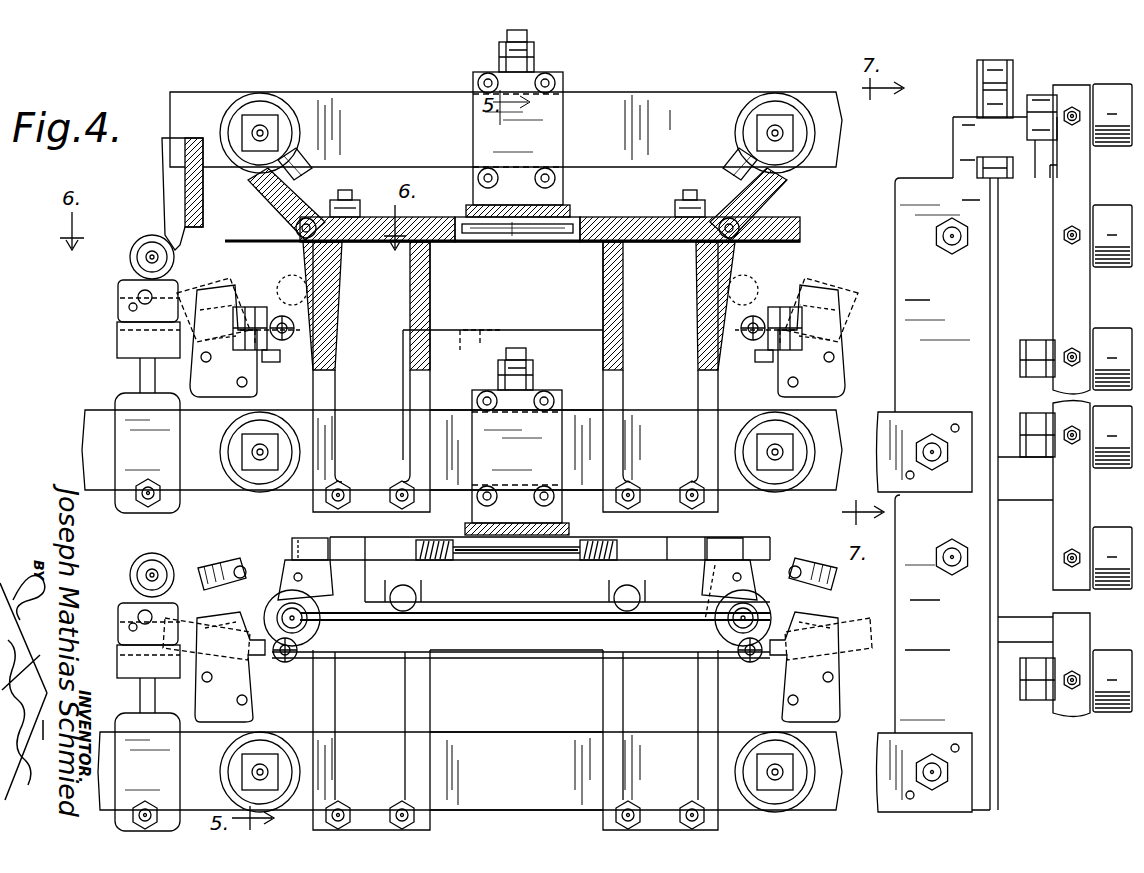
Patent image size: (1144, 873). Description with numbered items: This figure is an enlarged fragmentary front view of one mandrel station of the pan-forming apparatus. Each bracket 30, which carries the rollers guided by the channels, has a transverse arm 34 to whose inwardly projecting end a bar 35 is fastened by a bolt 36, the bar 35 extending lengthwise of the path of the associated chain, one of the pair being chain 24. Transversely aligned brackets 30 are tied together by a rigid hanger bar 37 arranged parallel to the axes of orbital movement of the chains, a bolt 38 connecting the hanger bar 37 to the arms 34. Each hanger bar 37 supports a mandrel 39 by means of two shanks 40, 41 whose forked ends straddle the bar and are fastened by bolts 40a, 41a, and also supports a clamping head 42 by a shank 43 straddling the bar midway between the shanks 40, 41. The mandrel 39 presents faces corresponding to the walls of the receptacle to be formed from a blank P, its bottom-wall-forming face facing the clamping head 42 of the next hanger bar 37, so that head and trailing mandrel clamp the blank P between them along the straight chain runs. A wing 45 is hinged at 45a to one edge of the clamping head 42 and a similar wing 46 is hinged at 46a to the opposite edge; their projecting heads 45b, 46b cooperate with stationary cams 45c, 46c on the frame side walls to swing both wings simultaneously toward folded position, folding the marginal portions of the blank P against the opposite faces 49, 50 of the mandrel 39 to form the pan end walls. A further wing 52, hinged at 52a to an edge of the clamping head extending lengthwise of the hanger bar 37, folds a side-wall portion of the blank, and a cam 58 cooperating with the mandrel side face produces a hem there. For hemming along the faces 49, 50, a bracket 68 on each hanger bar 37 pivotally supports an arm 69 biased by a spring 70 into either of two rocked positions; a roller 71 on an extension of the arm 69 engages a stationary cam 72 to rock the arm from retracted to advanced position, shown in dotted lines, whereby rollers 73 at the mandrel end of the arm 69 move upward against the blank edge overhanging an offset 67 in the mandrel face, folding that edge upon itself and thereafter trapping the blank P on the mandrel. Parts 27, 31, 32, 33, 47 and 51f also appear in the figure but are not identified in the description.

The chain 24 is at (985, 80).
The bracket 27 is at (958, 140).
The bracket 30 is at (1050, 320).
The roller 31 is at (1110, 92).
The roller 32 is at (1110, 338).
The roller 33 is at (1110, 212).
The arm 34 is at (1005, 274).
The bar 35 is at (960, 352).
The bolt 36 is at (950, 225).
The hanger bar 37 is at (650, 100).
The bolt 38 is at (932, 436).
The mandrel 39 is at (725, 275).
The shank 40 is at (372, 408).
The bolt 40a is at (398, 488).
The shank 41 is at (655, 412).
The bolt 41a is at (688, 488).
The clamping head 42 is at (623, 212).
The shank 43 is at (565, 134).
The wing 45 is at (280, 212).
The hinge 45a is at (342, 202).
The projecting head 45b is at (300, 160).
The stationary cam 45c is at (232, 566).
The wing 46 is at (765, 200).
The hinge 46a is at (730, 208).
The projecting head 46b is at (735, 160).
The stationary cam 46c is at (790, 566).
The carriage 47 is at (708, 540).
The face of mandrel 49 is at (312, 262).
The face of mandrel 50 is at (705, 255).
The wheel 51f is at (305, 628).
The wing 52 is at (516, 568).
The hinge 52a is at (485, 556).
The cam 58 is at (598, 560).
The offset 67 is at (300, 318).
The bracket 68 is at (125, 405).
The arm 69 is at (192, 300).
The spring 70 is at (216, 360).
The roller 71 is at (148, 238).
The stationary cam 72 is at (188, 200).
The rollers 73 is at (270, 318).
The blank P is at (790, 240).